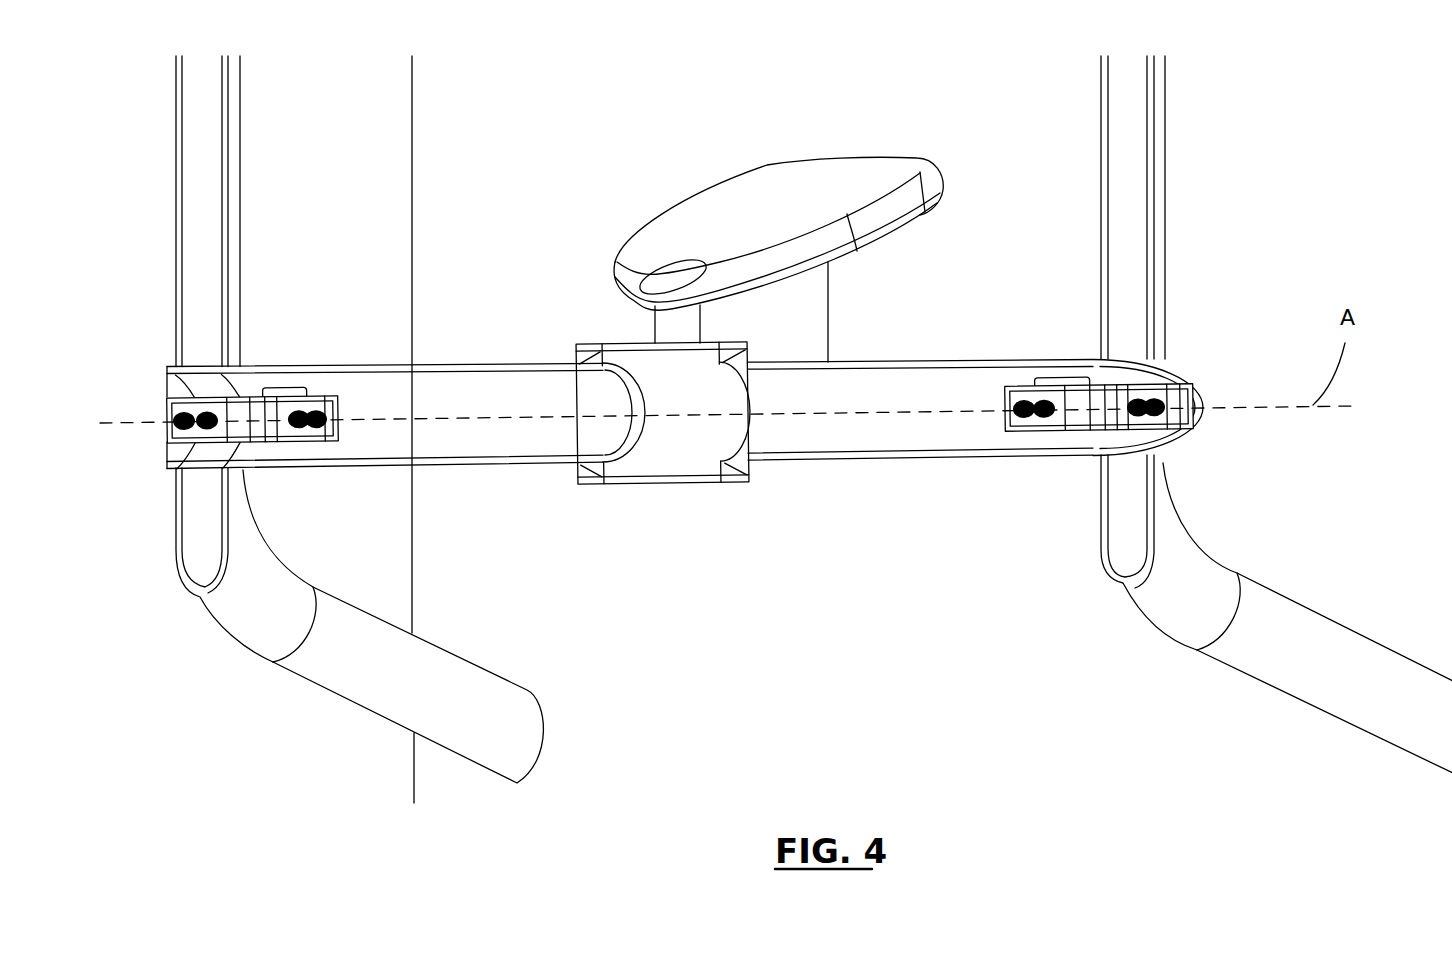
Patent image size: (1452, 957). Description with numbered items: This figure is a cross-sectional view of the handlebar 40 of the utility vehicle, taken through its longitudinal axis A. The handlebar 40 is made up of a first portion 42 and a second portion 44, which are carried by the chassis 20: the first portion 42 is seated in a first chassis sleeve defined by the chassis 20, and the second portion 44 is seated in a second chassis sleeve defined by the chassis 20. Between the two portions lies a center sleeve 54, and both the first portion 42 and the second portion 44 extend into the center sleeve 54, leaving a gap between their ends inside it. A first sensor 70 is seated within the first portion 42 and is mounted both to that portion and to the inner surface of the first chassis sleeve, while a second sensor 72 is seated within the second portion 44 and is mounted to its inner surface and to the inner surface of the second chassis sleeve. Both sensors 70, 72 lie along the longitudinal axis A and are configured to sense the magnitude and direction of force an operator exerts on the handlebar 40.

The chassis 20 is at (187, 147).
The handlebar 40 is at (500, 432).
The first portion 42 is at (940, 460).
The second portion 44 is at (427, 468).
The center sleeve 54 is at (673, 480).
The first sensor 70 is at (1057, 422).
The second sensor 72 is at (290, 436).